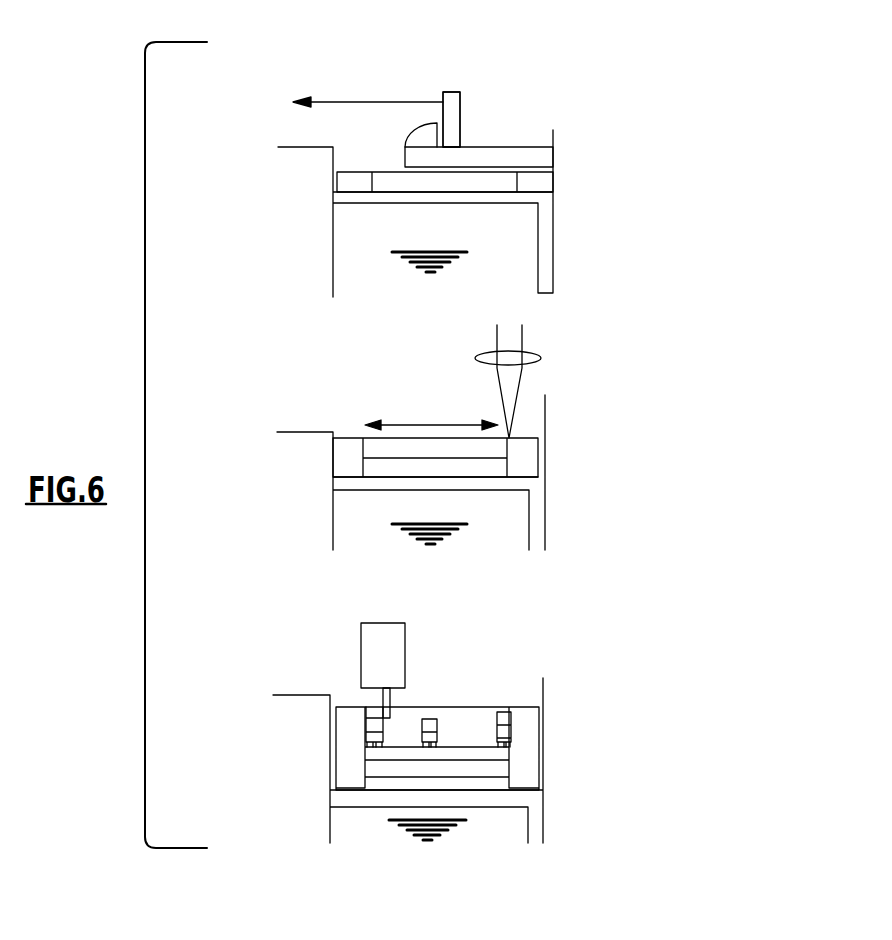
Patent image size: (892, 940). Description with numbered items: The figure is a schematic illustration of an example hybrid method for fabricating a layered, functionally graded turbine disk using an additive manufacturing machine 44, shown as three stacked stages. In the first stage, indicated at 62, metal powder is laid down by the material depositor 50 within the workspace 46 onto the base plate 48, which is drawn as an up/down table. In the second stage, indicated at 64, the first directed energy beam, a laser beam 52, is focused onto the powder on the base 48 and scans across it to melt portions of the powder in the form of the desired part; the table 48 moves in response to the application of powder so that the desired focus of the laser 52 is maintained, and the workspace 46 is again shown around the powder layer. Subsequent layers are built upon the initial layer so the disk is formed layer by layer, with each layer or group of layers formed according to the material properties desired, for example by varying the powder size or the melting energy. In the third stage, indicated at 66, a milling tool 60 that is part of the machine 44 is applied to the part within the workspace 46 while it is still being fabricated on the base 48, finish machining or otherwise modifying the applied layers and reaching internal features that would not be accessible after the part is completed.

The additive manufacturing machine 44 is at (333, 218).
The workspace 46 is at (448, 70).
The base plate 48 is at (490, 182).
The material depositor 50 is at (483, 106).
The laser beam 52 is at (517, 342).
The milling tool 60 is at (372, 650).
The powder laying step 62 is at (648, 67).
The table movement step 64 is at (633, 439).
The milling step 66 is at (619, 726).